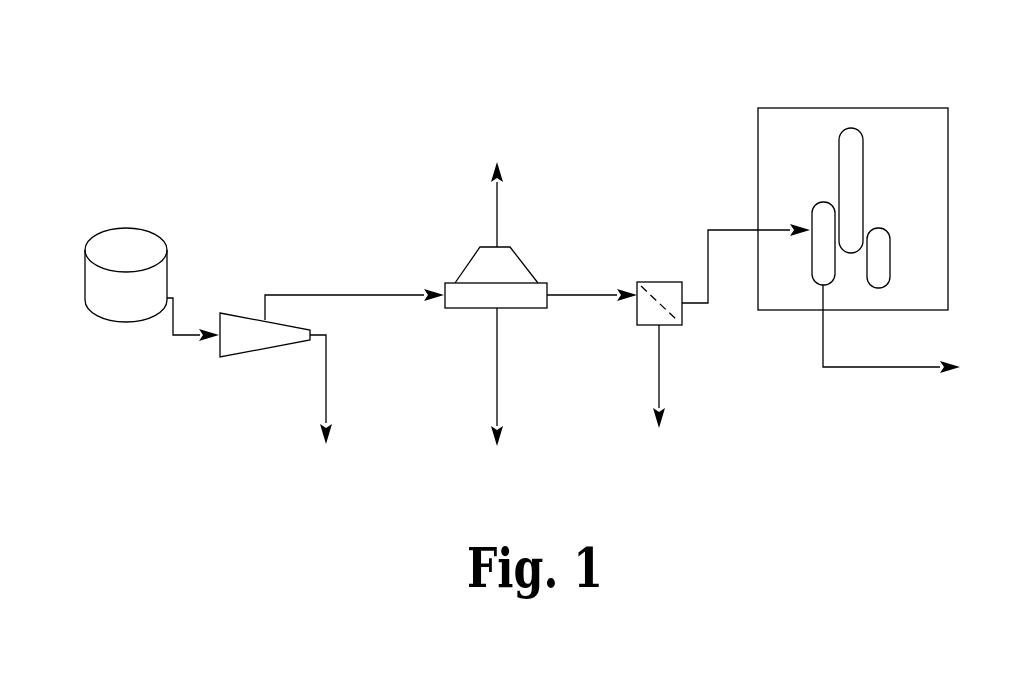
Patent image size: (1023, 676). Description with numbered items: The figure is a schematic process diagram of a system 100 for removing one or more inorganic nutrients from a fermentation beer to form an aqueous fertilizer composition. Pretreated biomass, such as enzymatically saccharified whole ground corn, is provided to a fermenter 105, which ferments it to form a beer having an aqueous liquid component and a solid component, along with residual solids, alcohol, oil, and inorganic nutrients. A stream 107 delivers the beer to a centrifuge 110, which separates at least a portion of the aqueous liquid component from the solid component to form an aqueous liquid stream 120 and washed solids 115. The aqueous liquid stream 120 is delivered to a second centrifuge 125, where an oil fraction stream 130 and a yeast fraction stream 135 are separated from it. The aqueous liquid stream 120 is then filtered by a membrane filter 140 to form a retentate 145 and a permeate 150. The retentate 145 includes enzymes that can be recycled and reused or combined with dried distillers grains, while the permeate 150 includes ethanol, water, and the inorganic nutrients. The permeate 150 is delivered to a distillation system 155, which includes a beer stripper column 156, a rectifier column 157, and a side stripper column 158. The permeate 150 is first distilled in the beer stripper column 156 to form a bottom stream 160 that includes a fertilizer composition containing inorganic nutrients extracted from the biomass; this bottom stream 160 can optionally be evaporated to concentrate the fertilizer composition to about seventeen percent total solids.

The system 100 is at (556, 66).
The fermenter 105 is at (166, 237).
The stream 107 is at (185, 336).
The centrifuge 110 is at (240, 358).
The washed solids 115 is at (327, 390).
The aqueous liquid stream 120 is at (350, 294).
The centrifuge 125 is at (460, 309).
The oil fraction stream 130 is at (498, 209).
The yeast fraction stream 135 is at (498, 371).
The membrane filter 140 is at (660, 281).
The retentate 145 is at (660, 385).
The permeate 150 is at (722, 229).
The distillation system 155 is at (949, 144).
The beer stripper column 156 is at (816, 201).
The rectifier column 157 is at (863, 157).
The side stripper column 158 is at (880, 227).
The bottom stream 160 is at (868, 368).